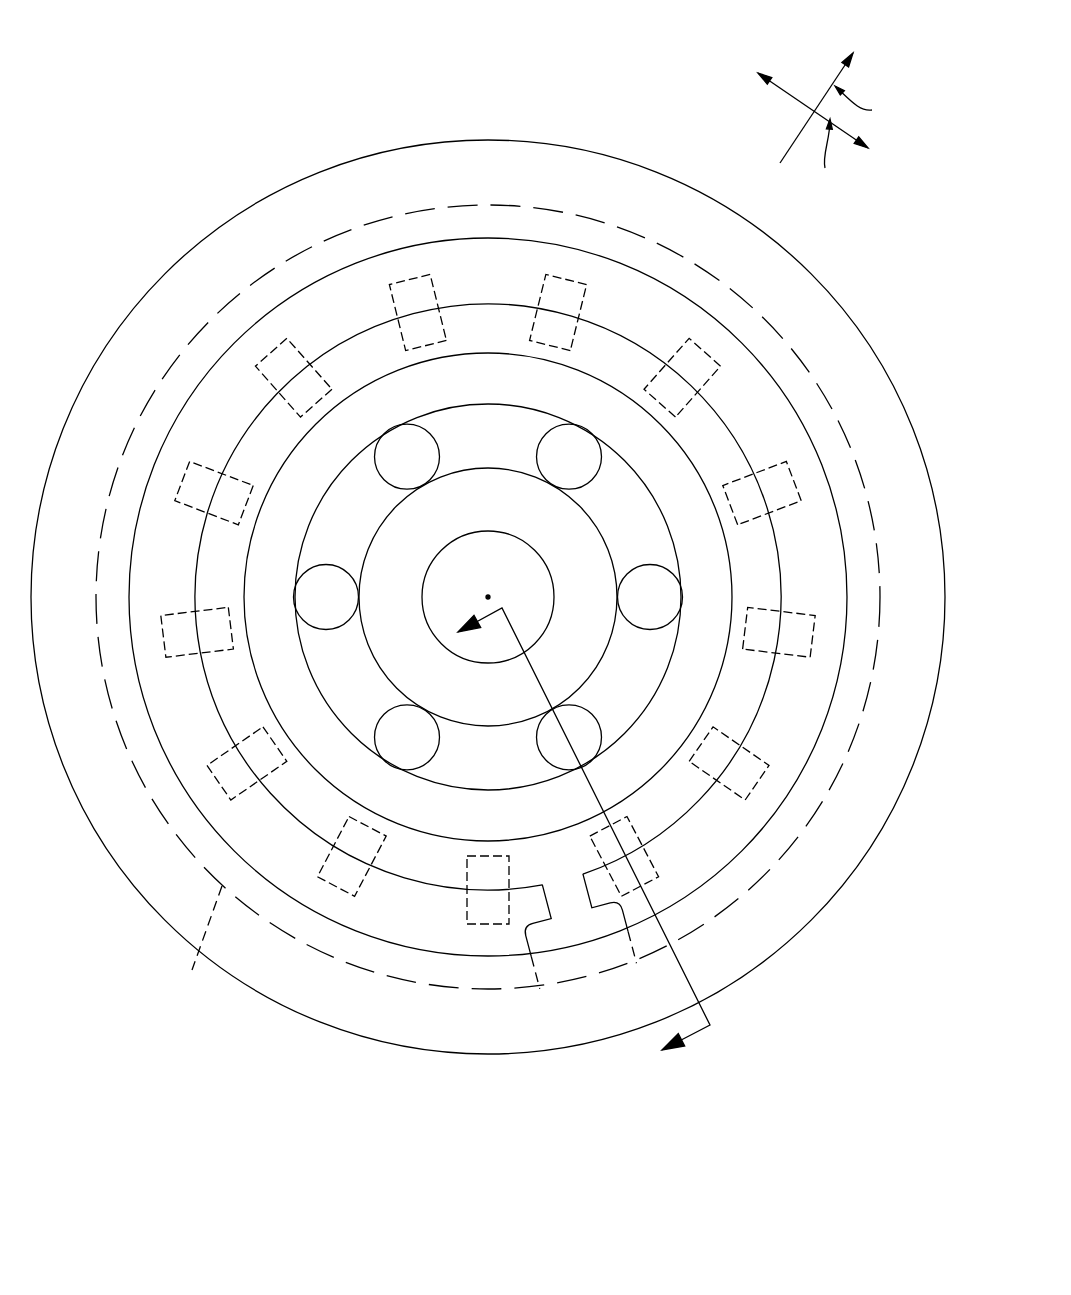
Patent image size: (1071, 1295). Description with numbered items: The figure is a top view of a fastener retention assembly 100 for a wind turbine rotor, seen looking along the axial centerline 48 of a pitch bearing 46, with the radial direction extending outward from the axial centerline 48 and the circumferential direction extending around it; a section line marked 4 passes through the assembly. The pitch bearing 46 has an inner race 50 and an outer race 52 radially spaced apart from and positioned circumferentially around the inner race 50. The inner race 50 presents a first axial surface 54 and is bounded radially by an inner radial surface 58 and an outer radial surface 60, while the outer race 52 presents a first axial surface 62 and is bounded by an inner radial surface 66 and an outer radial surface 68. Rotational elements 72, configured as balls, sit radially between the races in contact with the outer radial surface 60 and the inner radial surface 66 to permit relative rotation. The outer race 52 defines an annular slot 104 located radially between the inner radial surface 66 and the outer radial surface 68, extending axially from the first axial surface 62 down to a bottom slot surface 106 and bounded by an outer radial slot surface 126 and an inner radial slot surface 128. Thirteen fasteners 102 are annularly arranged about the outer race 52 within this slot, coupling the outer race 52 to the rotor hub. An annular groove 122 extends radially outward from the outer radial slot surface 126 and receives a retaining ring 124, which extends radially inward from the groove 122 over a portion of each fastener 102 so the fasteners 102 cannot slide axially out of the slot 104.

The fastener retention assembly 100 is at (146, 102).
The pitch bearing 46 is at (368, 137).
The outer race 52 is at (143, 292).
The outer radial surface 68 is at (247, 985).
The first axial surface 62 is at (673, 468).
The annular groove 122 is at (187, 980).
The outer radial slot surface 126 is at (843, 542).
The bottom slot surface 106 is at (630, 369).
The annular slot 104 is at (487, 323).
The fasteners 102 is at (422, 333).
The retaining ring 124 is at (390, 923).
The inner radial slot surface 128 is at (720, 677).
The inner radial surface 66 is at (667, 677).
The rotational elements 72 is at (318, 560).
The outer radial surface 60 is at (472, 467).
The first axial surface 54 is at (507, 516).
The inner race 50 is at (398, 637).
The inner radial surface 58 is at (423, 600).
The axial centerline 48 is at (488, 597).
The section line 4- 4 is at (576, 837).